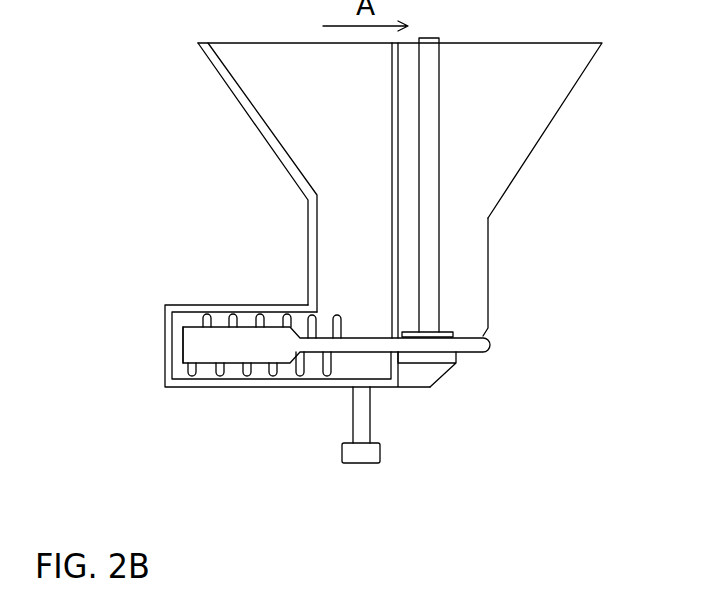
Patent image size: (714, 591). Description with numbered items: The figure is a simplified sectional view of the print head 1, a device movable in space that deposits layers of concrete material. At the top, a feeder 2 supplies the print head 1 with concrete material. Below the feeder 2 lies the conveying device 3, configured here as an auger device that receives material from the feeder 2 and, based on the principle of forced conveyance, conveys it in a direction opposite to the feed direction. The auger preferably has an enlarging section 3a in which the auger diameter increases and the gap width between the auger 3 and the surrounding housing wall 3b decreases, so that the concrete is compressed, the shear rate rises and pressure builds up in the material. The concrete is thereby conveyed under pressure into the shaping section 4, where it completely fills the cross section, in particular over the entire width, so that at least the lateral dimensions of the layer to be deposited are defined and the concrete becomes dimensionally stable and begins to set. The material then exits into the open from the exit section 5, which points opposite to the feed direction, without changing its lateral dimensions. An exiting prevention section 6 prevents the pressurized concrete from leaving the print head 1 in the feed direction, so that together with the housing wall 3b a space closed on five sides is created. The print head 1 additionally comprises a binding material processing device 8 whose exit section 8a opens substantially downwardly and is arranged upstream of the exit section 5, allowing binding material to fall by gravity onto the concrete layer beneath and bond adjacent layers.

The print head 1 is at (143, 126).
The feeder 2 is at (287, 167).
The conveying device 3 is at (345, 345).
The enlarging section 3a is at (295, 315).
The housing wall 3b is at (253, 313).
The shaping section 4 is at (175, 352).
The exit section 5 is at (165, 343).
The exiting prevention section 6 is at (397, 383).
The binding material processing device 8 is at (492, 263).
The exit section 8a is at (447, 368).